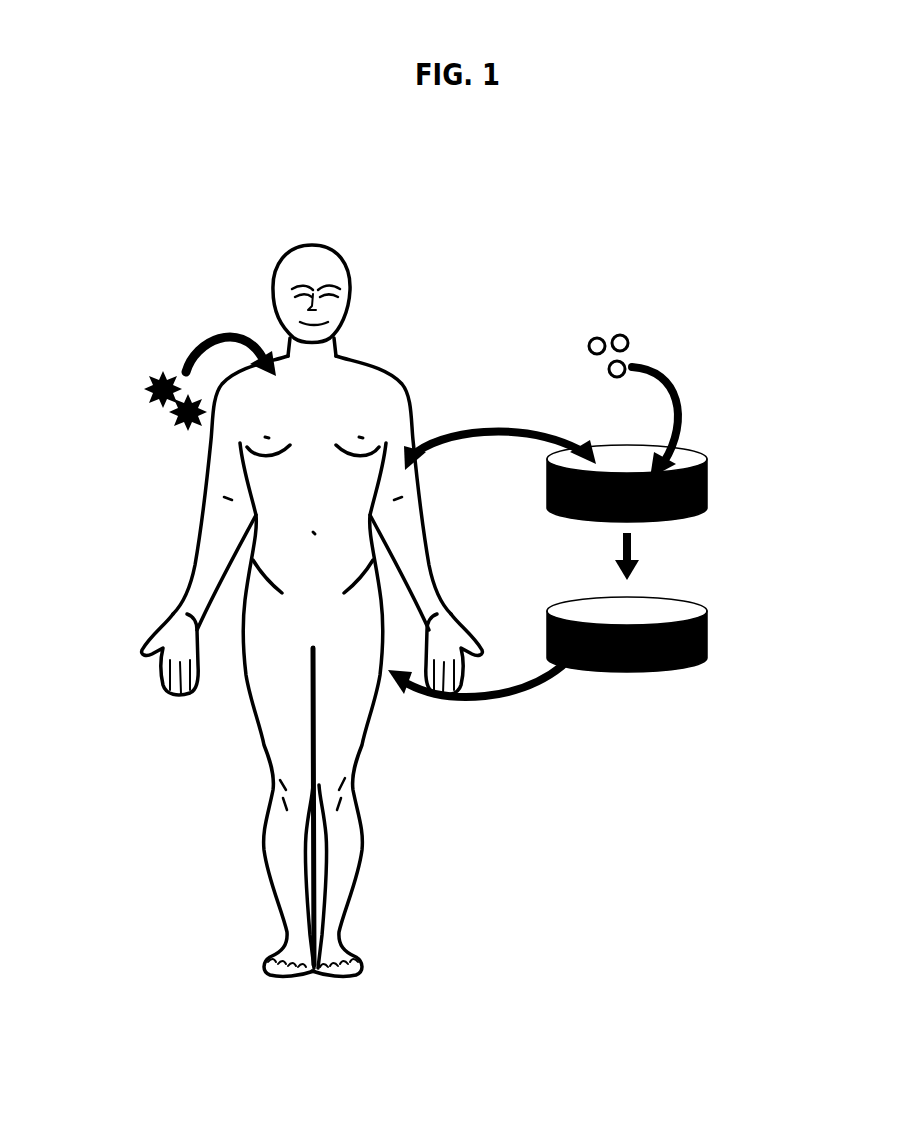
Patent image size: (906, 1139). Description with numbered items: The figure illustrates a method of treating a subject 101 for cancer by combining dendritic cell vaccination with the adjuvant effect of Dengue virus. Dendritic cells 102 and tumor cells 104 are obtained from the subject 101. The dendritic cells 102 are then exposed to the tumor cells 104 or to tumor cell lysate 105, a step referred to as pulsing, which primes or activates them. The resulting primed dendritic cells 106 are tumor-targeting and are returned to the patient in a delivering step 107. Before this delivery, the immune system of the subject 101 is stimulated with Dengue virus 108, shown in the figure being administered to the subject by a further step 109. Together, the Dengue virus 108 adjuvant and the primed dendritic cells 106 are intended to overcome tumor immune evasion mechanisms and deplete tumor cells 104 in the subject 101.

The subject 101 is at (316, 232).
The dendritic cells 102 is at (561, 367).
The tumor cells 104 is at (500, 426).
The tumor cell lysate 105 is at (663, 512).
The primed dendritic cells 106 is at (629, 696).
The delivering primed dendritic cells 107 is at (475, 712).
The Dengue virus 108 is at (129, 410).
The administration of dengue virus to patient 109 is at (223, 331).